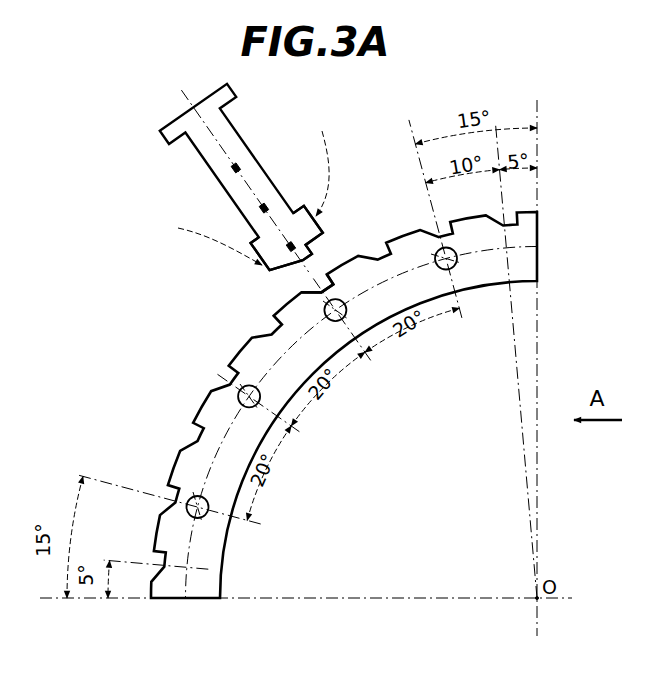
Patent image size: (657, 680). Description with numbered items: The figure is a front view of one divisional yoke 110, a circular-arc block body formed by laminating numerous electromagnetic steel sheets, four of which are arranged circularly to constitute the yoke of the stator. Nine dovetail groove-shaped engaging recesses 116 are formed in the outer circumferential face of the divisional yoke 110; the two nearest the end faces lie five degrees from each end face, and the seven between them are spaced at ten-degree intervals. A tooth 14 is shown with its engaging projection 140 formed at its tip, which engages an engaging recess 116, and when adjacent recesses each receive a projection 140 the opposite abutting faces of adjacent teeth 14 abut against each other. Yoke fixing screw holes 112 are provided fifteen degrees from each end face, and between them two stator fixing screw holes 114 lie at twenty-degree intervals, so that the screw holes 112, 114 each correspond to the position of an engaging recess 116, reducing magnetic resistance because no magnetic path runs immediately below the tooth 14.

The tooth 14 is at (205, 160).
The divisional yoke 110 is at (177, 462).
The yoke fixing screw holes 112 is at (437, 251).
The stator fixing screw holes 114 is at (302, 291).
The engaging recesses 116 is at (322, 262).
The engaging projection 140 is at (291, 263).